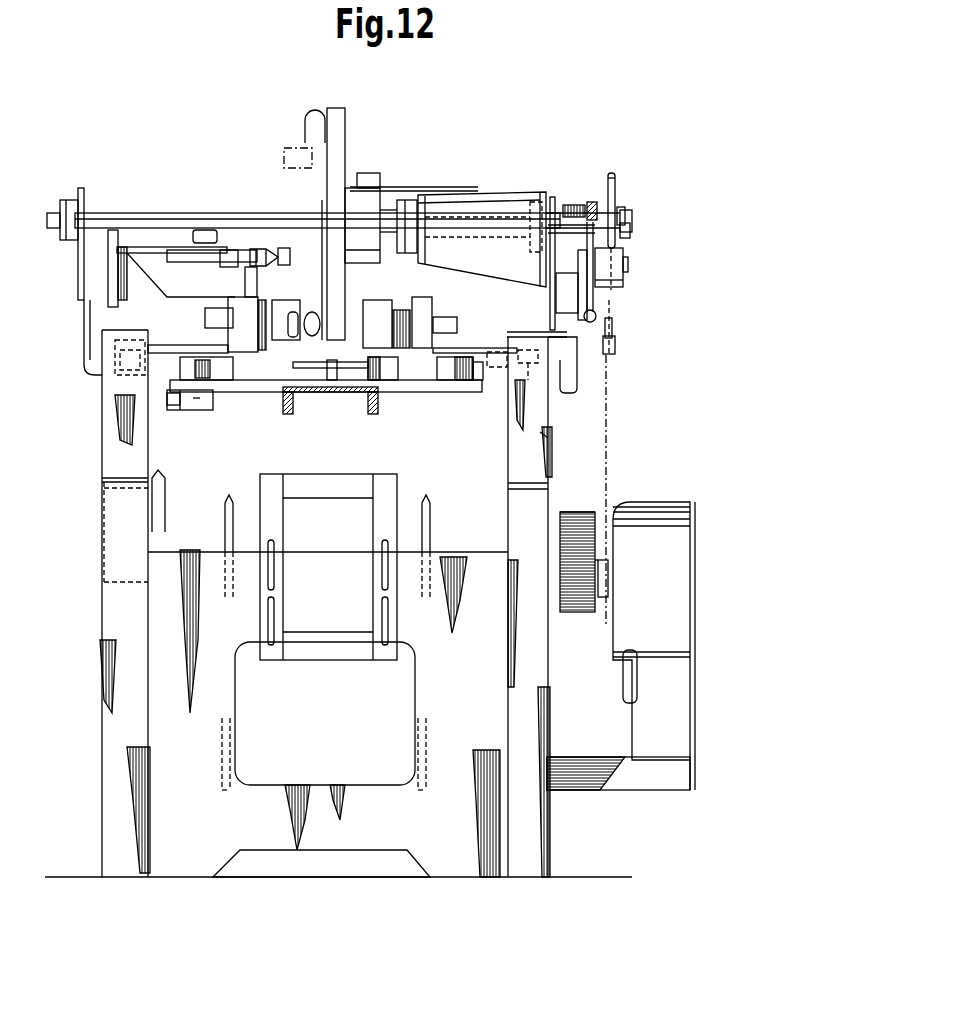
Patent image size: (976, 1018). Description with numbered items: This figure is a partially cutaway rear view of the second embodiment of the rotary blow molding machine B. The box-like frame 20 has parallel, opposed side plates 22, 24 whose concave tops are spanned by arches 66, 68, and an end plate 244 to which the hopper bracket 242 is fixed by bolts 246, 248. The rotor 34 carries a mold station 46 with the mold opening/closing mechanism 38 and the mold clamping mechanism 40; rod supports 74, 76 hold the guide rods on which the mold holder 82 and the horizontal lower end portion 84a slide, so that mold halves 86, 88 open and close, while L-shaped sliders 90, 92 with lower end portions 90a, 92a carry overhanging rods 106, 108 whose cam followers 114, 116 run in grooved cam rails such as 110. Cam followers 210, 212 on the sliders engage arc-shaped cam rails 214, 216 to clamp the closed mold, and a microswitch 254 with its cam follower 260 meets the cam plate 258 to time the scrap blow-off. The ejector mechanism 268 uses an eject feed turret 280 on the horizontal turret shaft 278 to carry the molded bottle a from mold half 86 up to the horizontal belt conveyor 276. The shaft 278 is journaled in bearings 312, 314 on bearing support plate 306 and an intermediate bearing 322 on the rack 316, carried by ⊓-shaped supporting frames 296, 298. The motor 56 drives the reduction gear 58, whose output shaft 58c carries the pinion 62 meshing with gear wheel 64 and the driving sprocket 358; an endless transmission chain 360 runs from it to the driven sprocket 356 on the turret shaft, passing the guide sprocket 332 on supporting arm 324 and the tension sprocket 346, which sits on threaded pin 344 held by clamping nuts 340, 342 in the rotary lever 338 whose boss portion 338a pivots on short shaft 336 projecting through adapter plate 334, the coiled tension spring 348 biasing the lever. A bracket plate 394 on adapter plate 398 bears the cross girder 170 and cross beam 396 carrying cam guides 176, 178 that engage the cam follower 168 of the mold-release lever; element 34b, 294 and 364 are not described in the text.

The box-like frame 20 is at (180, 738).
The side plate 22 is at (120, 630).
The side plate 24 is at (530, 675).
The rotor 34 is at (369, 400).
The base plate portion 34b is at (636, 775).
The mold opening/closing mechanism 38 is at (505, 332).
The mold clamping mechanism 40 is at (210, 300).
The mold station 46 is at (475, 438).
The motor 56 is at (657, 718).
The reduction gear 58 is at (665, 523).
The output shaft 58c is at (599, 600).
The pinion 62 is at (565, 582).
The gear wheel 64 is at (565, 522).
The arch 66 is at (121, 418).
The arch 68 is at (548, 438).
The rod support 74 is at (480, 381).
The rod support 76 is at (330, 386).
The mold holder 82 is at (283, 312).
The horizontal lower end portion 84a is at (383, 370).
The mold half 86 is at (290, 258).
The mold half 88 is at (368, 312).
The L-shaped slider 90 is at (233, 306).
The horizontal lower end portion 90a is at (222, 365).
The L-shaped slider 92 is at (422, 305).
The horizontal lower end portion 92a is at (437, 370).
The overhanging rod 106 is at (176, 346).
The overhanging rod 108 is at (455, 349).
The grooved cam rail 110 is at (120, 371).
The cam follower 114 is at (115, 353).
The cam follower 116 is at (525, 430).
The cam follower 168 is at (232, 250).
The cross girder 170 is at (213, 230).
The cam guide 176 is at (228, 250).
The cam guide 178 is at (270, 249).
The cam follower 210 is at (208, 314).
The cam follower 212 is at (446, 320).
The cam rail 214 is at (226, 520).
The cam rail 216 is at (432, 517).
The bracket 242 is at (330, 490).
The end plate 244 is at (187, 689).
The bolt 246 is at (272, 568).
The bolt 248 is at (386, 568).
The microswitch 254 is at (193, 402).
The cam plate 258 is at (165, 492).
The cam follower 260 is at (167, 398).
The ejector mechanism 268 is at (425, 130).
The horizontal belt conveyor 276 is at (285, 155).
The horizontal turret shaft 278 is at (148, 213).
The eject feed turret 280 is at (402, 130).
The motor housing 294 is at (361, 195).
The supporting frame 296 is at (87, 329).
The supporting frame 298 is at (577, 360).
The bearing support plate 306 is at (78, 254).
The bearing 312 is at (64, 205).
The bearing 314 is at (530, 245).
The rack 316 is at (483, 212).
The bearing 322 is at (404, 253).
The supporting arm 324 is at (613, 328).
The guide sprocket 332 is at (616, 345).
The adapter plate 334 is at (600, 250).
The short shaft 336 is at (628, 266).
The rotary lever 338 is at (594, 295).
The boss portion 338a is at (623, 256).
The clamping nut 340 is at (590, 202).
The clamping nut 342 is at (611, 174).
The threaded pin 344 is at (568, 205).
The tension sprocket 346 is at (625, 212).
The coiled tension spring 348 is at (597, 316).
The driven sprocket 356 is at (616, 178).
The driving sprocket 358 is at (606, 568).
The endless transmission chain 360 is at (608, 408).
The shelf 364 is at (410, 187).
The bracket plate 394 is at (121, 248).
The cross beam 396 is at (197, 247).
The adapter plate 398 is at (112, 232).
The molded bottle a is at (315, 118).
The rotary blow molding machine B is at (530, 137).